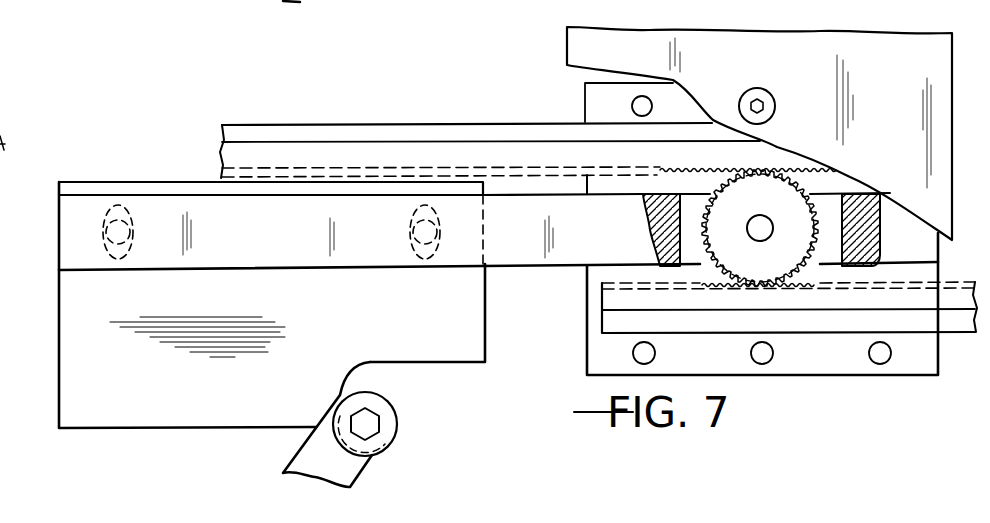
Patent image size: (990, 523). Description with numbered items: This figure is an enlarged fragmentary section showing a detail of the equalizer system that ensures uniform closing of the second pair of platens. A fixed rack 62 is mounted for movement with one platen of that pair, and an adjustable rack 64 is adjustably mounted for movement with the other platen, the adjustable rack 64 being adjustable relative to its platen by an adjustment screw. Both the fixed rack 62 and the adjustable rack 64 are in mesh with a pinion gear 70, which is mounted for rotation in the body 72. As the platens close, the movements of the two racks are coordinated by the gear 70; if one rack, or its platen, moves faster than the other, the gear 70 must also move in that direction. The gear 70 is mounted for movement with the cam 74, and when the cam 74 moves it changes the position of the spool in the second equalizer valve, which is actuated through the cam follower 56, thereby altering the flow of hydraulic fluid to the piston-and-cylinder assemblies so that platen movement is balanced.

The cam follower 56 is at (373, 465).
The fixed rack 62 is at (952, 297).
The adjustable rack 64 is at (234, 153).
The pinion gear 70 is at (830, 183).
The body 72 is at (584, 276).
The cam 74 is at (457, 331).